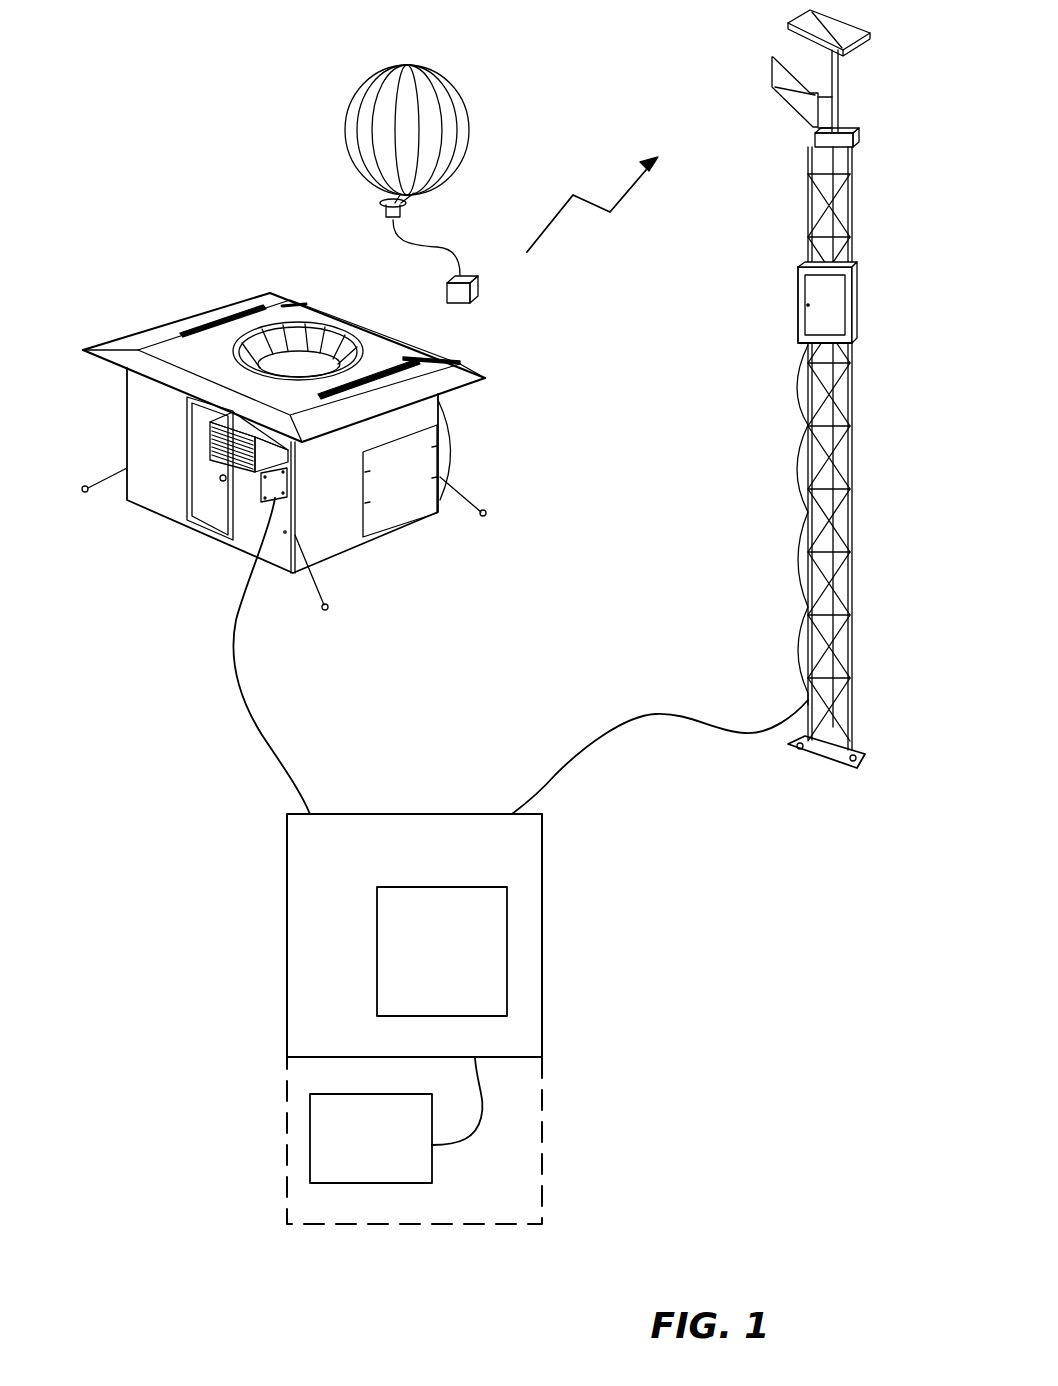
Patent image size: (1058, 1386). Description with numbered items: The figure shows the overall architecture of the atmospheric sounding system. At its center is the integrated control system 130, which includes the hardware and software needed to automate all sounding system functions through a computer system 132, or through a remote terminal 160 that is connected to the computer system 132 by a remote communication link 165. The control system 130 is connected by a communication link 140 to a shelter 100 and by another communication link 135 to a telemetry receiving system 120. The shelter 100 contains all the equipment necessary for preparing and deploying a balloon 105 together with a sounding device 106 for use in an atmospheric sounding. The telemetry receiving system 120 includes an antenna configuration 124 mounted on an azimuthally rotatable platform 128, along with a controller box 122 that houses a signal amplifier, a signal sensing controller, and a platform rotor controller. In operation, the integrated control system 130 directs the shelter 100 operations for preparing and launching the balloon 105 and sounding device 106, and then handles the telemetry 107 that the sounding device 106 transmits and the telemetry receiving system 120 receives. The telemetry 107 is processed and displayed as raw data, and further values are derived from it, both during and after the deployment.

The shelter 100 is at (150, 484).
The balloon 105 is at (345, 119).
The sounding device 106 is at (478, 285).
The telemetry 107 is at (608, 215).
The telemetry receiving system 120 is at (790, 514).
The controller box 122 is at (797, 310).
The antenna configuration 124 is at (772, 41).
The azimuthally rotatable platform 128 is at (813, 135).
The integrated control system 130 is at (585, 1032).
The computer system 132 is at (508, 905).
The communication link 135 is at (645, 722).
The communication link 140 is at (248, 723).
The remote terminal 160 is at (310, 1145).
The remote communication link 165 is at (481, 1113).